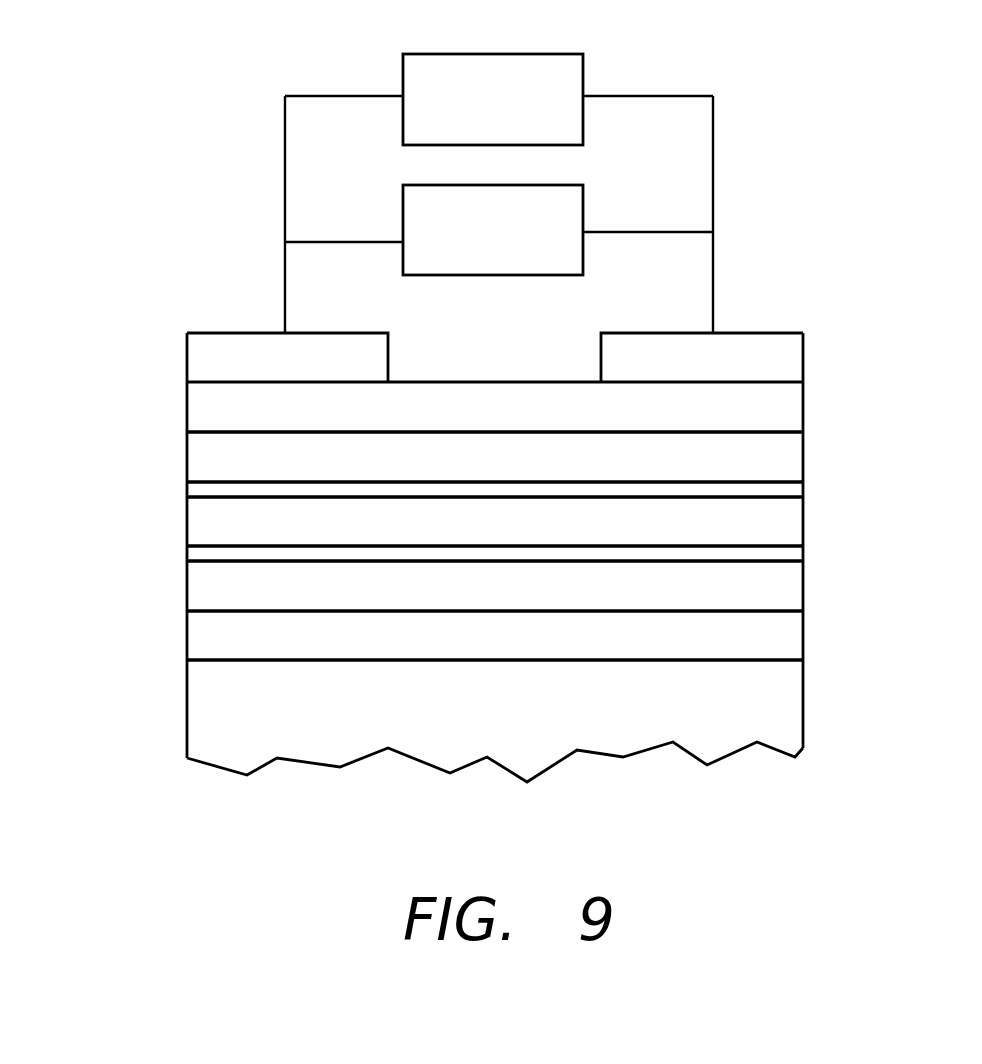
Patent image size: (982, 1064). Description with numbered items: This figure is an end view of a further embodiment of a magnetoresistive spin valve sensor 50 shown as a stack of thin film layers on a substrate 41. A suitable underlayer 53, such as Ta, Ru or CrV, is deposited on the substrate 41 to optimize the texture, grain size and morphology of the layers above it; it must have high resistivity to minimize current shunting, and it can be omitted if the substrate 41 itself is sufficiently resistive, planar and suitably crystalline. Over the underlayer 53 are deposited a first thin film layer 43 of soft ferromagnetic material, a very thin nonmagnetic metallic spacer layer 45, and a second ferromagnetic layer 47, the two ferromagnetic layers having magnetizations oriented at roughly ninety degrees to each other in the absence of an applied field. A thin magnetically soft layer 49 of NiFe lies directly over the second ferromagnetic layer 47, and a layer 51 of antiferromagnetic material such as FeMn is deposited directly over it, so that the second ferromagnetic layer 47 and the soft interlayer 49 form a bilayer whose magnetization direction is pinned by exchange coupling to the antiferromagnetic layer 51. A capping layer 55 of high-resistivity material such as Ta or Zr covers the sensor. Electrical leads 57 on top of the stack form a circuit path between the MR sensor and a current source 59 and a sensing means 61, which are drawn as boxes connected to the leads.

The substrate 41 is at (790, 718).
The first ferromagnetic layer 43 is at (200, 590).
The nonmagnetic metallic spacer layer 45 is at (790, 555).
The second ferromagnetic layer 47 is at (200, 523).
The magnetically soft interlayer 49 is at (790, 487).
The magnetoresistive sensor 50 is at (143, 679).
The antiferromagnetic layer 51 is at (790, 455).
The underlayer 53 is at (790, 643).
The capping layer 55 is at (200, 407).
The electrical leads 57 is at (225, 333).
The current source 59 is at (513, 275).
The sensing means 61 is at (443, 53).